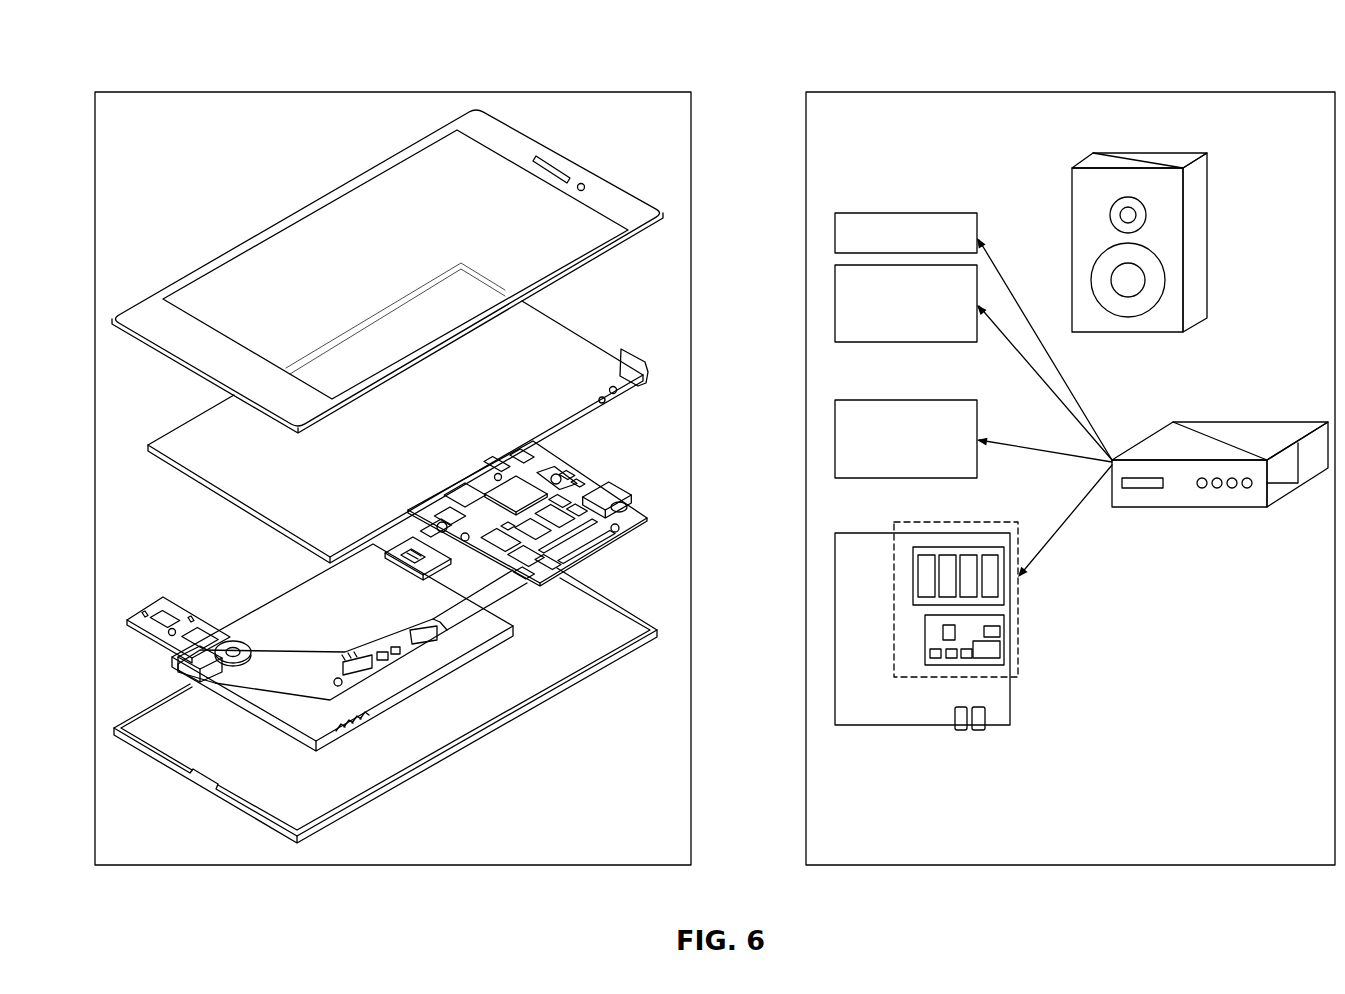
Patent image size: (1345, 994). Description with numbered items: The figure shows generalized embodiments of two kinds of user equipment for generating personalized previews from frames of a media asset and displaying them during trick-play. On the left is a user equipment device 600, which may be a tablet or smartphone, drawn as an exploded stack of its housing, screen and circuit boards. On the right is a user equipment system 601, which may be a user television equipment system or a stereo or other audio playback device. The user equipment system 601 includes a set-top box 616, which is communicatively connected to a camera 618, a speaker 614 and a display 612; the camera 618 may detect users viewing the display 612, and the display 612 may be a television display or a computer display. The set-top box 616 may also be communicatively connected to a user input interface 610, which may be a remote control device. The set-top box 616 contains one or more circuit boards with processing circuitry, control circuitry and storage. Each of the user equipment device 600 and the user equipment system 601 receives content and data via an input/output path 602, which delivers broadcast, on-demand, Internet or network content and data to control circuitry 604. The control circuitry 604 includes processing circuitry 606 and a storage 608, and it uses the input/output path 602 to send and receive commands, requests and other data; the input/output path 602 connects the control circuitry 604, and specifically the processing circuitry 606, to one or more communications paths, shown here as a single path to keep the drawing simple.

The user equipment device 600 is at (181, 60).
The user equipment system 601 is at (1242, 64).
The input/output path 602 is at (224, 667).
The control circuitry 604 is at (890, 657).
The processing circuitry 606 is at (922, 635).
The storage 608 is at (522, 493).
The user input interface 610 is at (558, 371).
The display 612 is at (624, 372).
The speaker 614 is at (1070, 237).
The set-top box 616 is at (1250, 421).
The camera 618 is at (605, 206).